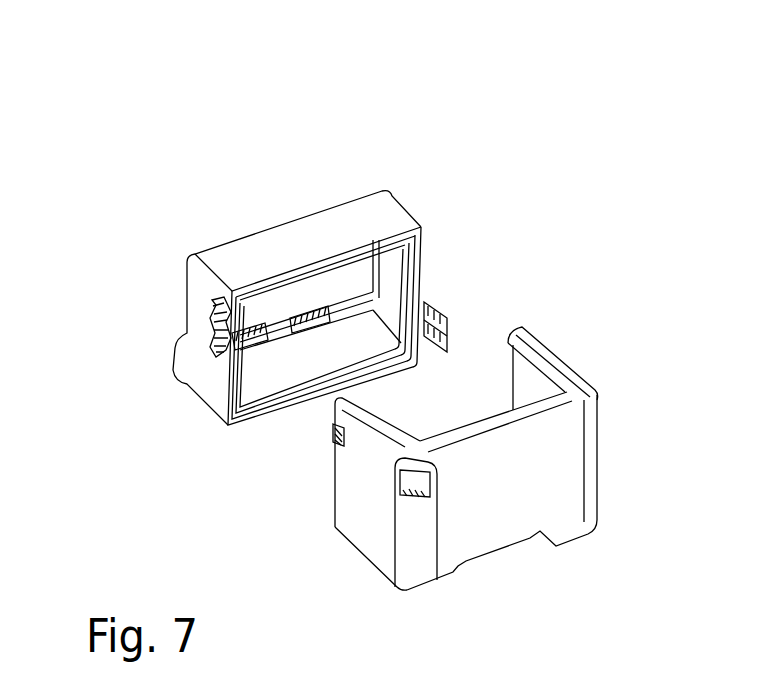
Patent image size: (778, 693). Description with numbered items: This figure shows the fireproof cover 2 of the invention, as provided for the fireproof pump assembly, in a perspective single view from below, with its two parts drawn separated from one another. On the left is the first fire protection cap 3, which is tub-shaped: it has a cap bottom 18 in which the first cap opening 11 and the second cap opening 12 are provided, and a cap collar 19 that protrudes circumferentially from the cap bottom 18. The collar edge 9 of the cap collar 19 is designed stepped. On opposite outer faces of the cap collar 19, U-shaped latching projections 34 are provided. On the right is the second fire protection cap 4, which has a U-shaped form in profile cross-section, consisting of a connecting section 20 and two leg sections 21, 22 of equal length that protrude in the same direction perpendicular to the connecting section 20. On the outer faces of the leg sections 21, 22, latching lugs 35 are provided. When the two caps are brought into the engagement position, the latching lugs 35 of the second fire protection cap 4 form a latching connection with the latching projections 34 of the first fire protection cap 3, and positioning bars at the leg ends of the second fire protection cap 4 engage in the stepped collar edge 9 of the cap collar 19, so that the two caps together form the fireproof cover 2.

The fireproof cover 2 is at (142, 60).
The first fire protection cap 3 is at (148, 240).
The second fire protection cap 4 is at (622, 363).
The collar edge 9 is at (247, 414).
The first cap opening 11 is at (254, 341).
The second cap opening 12 is at (308, 320).
The cap bottom 18 is at (352, 289).
The cap collar 19 is at (297, 238).
The connecting section 20 is at (514, 508).
The leg section 21 is at (374, 500).
The leg section 22 is at (532, 383).
The latching projection 34 is at (209, 358).
The latching lug 35 is at (334, 430).